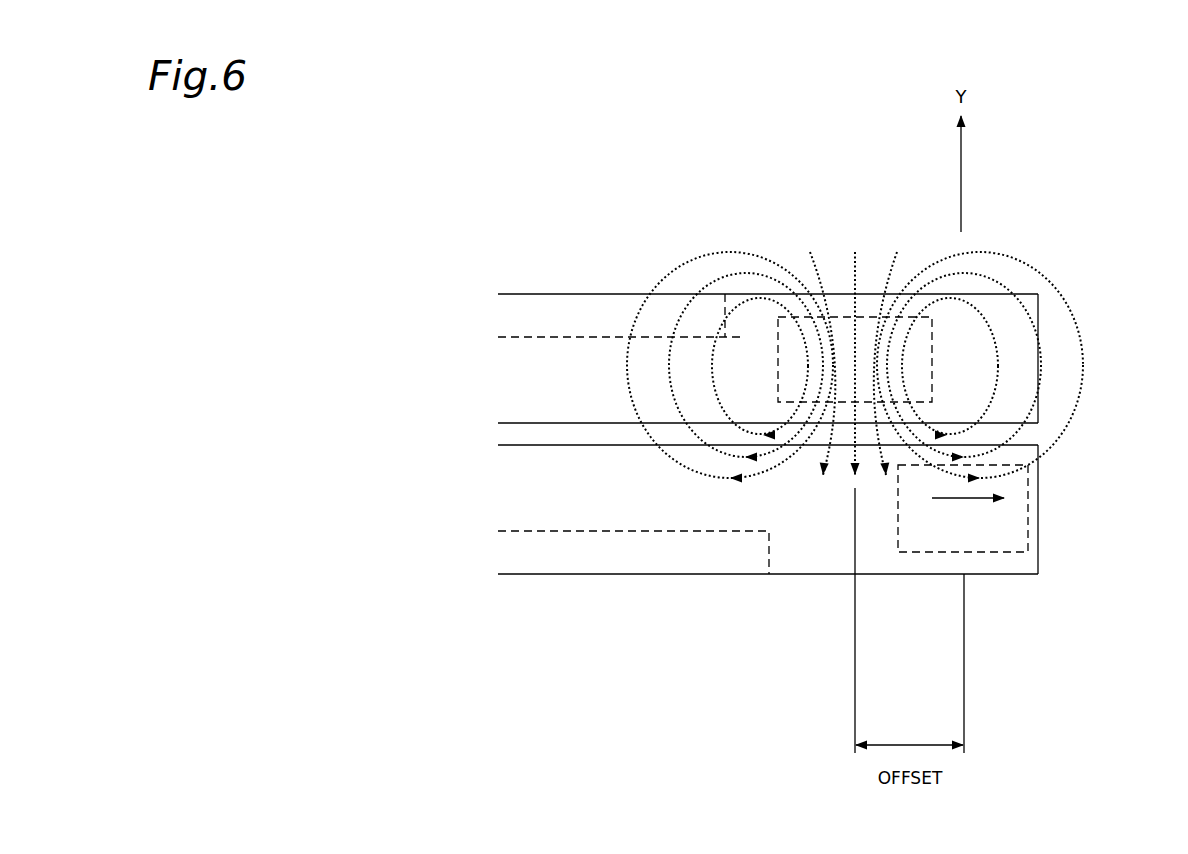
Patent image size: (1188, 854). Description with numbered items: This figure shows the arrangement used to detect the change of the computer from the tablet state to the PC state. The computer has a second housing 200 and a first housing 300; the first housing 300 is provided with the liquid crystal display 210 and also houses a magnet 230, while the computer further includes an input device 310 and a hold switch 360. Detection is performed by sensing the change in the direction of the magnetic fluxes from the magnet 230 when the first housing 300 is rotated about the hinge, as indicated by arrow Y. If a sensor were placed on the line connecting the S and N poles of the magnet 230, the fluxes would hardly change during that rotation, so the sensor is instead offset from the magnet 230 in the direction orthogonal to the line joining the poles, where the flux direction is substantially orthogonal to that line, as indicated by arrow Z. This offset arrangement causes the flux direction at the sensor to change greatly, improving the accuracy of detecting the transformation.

The second housing 200 is at (509, 258).
The liquid crystal display 210 is at (615, 312).
The magnet 230 is at (859, 308).
The first housing 300 is at (553, 595).
The input device 310 is at (693, 563).
The hold switch 360 is at (1031, 516).